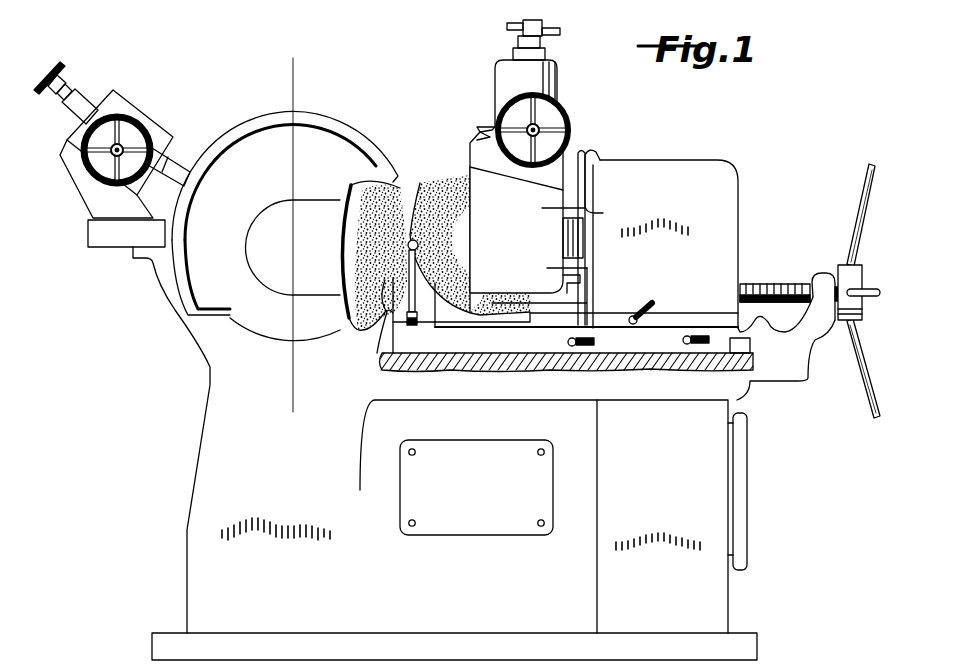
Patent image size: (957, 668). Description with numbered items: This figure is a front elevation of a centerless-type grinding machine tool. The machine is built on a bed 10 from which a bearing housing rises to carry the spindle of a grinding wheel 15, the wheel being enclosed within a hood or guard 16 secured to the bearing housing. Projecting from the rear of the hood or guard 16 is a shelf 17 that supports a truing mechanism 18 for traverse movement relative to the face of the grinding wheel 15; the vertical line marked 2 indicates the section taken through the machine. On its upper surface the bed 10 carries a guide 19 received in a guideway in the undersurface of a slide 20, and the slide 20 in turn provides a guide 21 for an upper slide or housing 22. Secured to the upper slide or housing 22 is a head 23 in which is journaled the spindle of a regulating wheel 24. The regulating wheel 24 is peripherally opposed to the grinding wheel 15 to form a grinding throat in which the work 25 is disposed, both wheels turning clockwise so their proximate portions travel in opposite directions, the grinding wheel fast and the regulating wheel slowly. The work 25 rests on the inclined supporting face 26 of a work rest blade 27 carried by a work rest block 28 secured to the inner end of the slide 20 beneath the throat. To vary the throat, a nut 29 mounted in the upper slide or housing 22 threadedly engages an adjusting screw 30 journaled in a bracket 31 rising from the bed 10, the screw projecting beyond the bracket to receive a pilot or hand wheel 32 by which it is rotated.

The section line 2- 2 is at (272, 66).
The bed 10 is at (728, 515).
The grinding wheel 15 is at (398, 180).
The hood or guard 16 is at (337, 125).
The shelf 17 is at (110, 240).
The truing mechanism 18 is at (113, 103).
The guide 19 is at (753, 340).
The slide 20 is at (672, 345).
The guide 21 is at (515, 325).
The upper slide or housing 22 is at (738, 198).
The head 23 is at (567, 165).
The regulating wheel 24 is at (453, 200).
The work 25 is at (437, 180).
The inclined supporting face 26 is at (418, 248).
The work rest blade 27 is at (415, 287).
The work rest block 28 is at (401, 310).
The nut 29 is at (740, 278).
The adjusting screw 30 is at (783, 285).
The bracket 31 is at (822, 277).
The pilot or hand wheel 32 is at (853, 277).